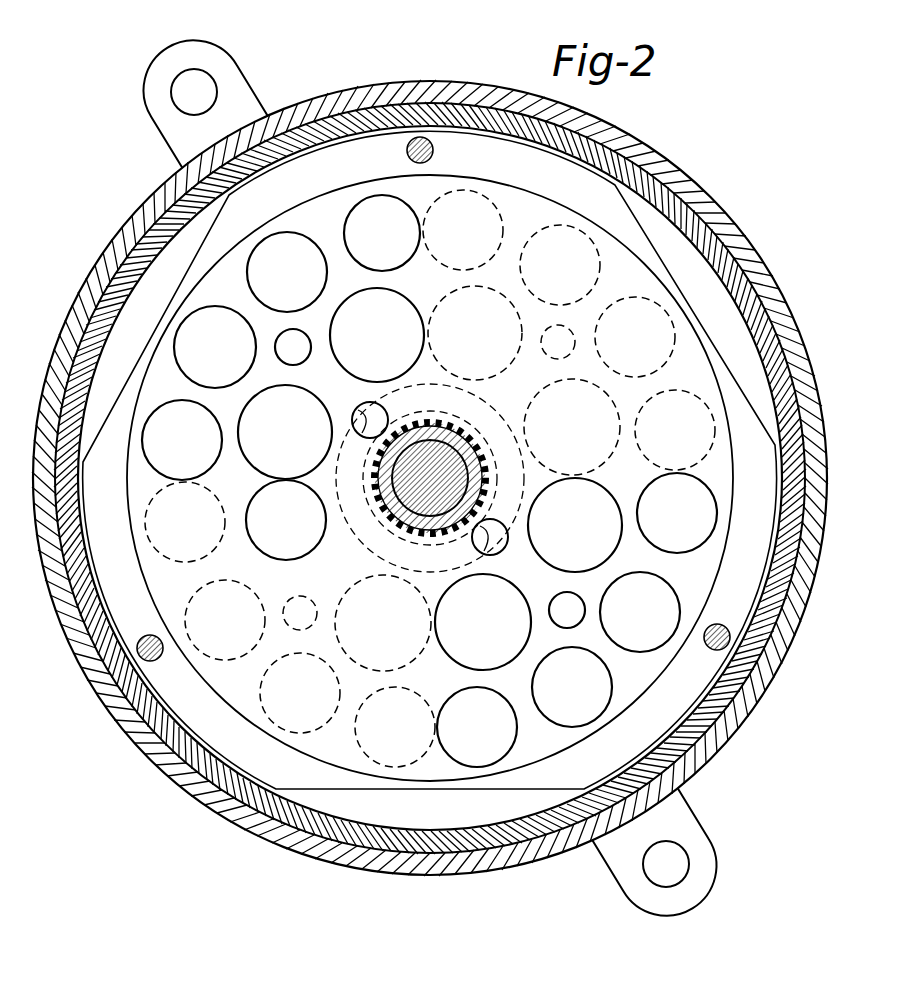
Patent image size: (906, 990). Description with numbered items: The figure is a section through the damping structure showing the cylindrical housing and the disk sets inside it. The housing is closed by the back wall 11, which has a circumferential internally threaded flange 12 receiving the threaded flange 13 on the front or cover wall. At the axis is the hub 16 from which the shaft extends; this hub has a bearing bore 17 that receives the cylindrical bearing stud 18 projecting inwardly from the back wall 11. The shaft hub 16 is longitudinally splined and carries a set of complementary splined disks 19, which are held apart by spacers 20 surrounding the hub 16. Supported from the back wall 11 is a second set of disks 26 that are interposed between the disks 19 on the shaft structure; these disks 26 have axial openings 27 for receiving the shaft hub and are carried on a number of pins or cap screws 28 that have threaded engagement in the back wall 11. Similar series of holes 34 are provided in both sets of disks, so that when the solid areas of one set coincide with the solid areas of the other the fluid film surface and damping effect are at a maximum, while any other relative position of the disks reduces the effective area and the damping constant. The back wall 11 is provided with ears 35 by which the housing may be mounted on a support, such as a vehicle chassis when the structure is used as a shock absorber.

The back wall 11 is at (505, 812).
The internally threaded flange 12 is at (503, 76).
The threaded flange 13 is at (388, 106).
The hub 16 is at (415, 541).
The bearing bore 17 is at (478, 497).
The bearing stud 18 is at (420, 500).
The splined disks 19 is at (190, 305).
The spacers 20 is at (491, 548).
The disks 26 is at (203, 247).
The axial openings 27 is at (368, 406).
The pins or cap screws 28 is at (405, 152).
The holes 34 is at (335, 375).
The ears 35 is at (248, 104).